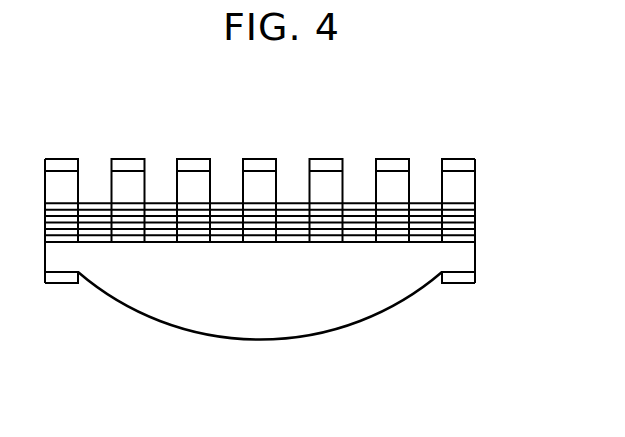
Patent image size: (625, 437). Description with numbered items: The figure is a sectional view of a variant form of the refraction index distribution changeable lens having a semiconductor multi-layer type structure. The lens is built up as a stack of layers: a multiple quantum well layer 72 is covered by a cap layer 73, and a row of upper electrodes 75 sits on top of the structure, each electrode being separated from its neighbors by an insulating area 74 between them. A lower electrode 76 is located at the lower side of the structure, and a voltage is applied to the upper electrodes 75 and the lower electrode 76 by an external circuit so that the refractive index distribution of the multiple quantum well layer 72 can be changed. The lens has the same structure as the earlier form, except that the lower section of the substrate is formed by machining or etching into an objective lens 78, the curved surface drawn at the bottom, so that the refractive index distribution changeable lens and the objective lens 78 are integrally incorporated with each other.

The multiple quantum well layer 72 is at (488, 202).
The cap layer 73 is at (468, 188).
The insulating area 74 is at (357, 203).
The upper electrodes 75 is at (472, 164).
The lower electrode 76 is at (462, 283).
The objective lens 78 is at (365, 303).